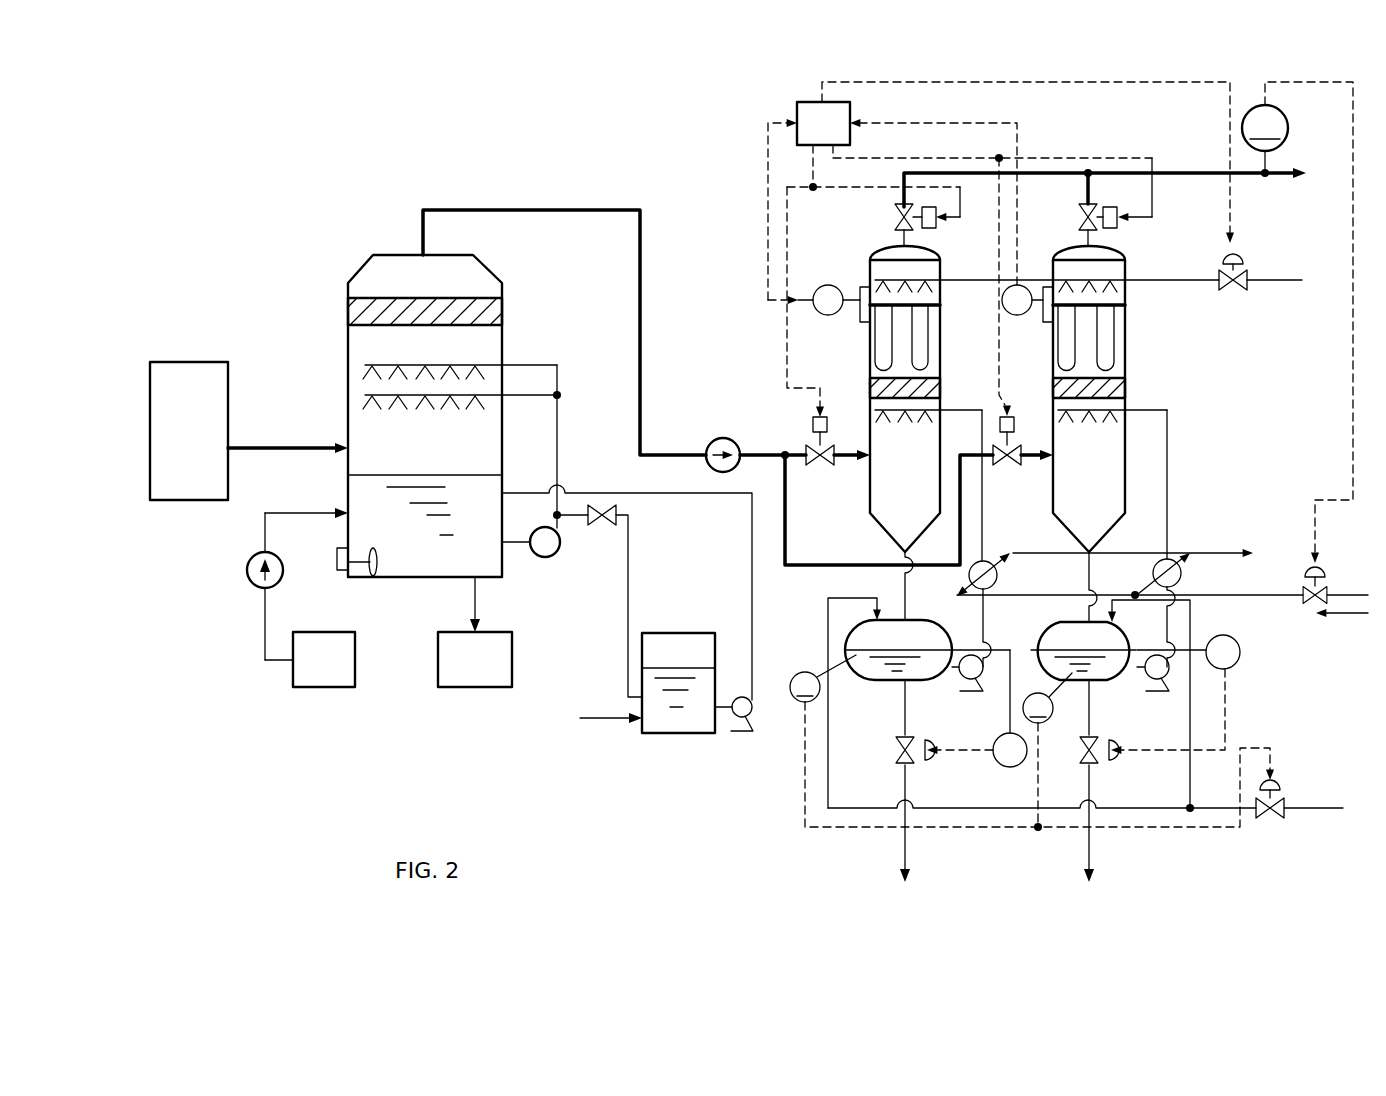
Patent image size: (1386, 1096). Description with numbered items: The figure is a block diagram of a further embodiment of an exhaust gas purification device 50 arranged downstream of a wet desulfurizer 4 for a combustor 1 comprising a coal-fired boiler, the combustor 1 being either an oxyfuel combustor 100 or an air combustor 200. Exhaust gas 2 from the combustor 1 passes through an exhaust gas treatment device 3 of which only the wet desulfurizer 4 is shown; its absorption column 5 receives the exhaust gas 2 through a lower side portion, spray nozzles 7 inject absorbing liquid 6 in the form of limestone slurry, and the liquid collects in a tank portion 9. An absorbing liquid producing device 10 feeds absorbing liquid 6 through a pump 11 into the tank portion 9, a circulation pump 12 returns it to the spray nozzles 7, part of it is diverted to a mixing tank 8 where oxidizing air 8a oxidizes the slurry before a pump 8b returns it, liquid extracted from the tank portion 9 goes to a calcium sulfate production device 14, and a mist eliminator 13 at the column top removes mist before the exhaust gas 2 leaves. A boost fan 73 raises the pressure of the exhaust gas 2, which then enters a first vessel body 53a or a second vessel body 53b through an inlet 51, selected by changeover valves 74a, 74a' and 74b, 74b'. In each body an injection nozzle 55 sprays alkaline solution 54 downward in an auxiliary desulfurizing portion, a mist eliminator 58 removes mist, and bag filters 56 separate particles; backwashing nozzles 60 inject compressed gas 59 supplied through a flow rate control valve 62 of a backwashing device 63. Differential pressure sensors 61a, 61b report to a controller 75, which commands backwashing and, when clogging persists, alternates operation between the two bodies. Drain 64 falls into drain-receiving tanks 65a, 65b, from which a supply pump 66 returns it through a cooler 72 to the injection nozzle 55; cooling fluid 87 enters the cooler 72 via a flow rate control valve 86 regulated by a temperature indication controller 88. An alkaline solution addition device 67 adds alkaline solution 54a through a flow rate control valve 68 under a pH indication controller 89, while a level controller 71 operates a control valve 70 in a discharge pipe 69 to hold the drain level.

The combustor 1 is at (196, 432).
The exhaust gas 2 is at (262, 446).
The exhaust gas treatment device 3 is at (424, 334).
The wet desulfurizer 4 is at (424, 369).
The absorption column 5 is at (348, 347).
The absorbing liquid 6 is at (425, 410).
The spray nozzles 7 is at (412, 428).
The mixing tank 8 is at (637, 654).
The oxidizing air 8a is at (590, 720).
The pump 8b is at (748, 740).
The tank portion 9 is at (503, 578).
The absorbing liquid producing device 10 is at (322, 688).
The pump 11 is at (248, 584).
The circulation pump 12 is at (552, 556).
The mist eliminator 13 is at (502, 298).
The calcium sulfate production device 14 is at (475, 688).
The exhaust gas purification device 50 is at (790, 343).
The inlet 51 is at (876, 462).
The first vessel body 53a is at (1074, 376).
The second vessel body 53b is at (1142, 250).
The alkaline solution 54 is at (912, 432).
The alkaline solution 54a is at (1215, 810).
The injection nozzle 55 is at (940, 417).
The bag filters 56 is at (885, 360).
The mist eliminator 58 is at (868, 386).
The compressed gas 59 is at (925, 322).
The backwashing nozzles 60 is at (935, 285).
The differential pressure sensor 61a is at (826, 285).
The differential pressure sensor 61b is at (1020, 285).
The flow rate control valve 62 is at (1255, 293).
The backwashing device 63 is at (1216, 305).
The drain 64 is at (983, 639).
The drain-receiving tank 65a is at (860, 681).
The drain-receiving tank 65b is at (1100, 682).
The supply pump 66 is at (965, 692).
The alkaline solution addition device 67 is at (1094, 741).
The flow rate control valve 68 is at (1283, 782).
The discharge pipe 69 is at (999, 781).
The control valve 70 is at (927, 762).
The level controller 71 is at (1008, 770).
The cooler 72 is at (998, 587).
The boost fan 73 is at (712, 435).
The changeover valve 74a is at (803, 326).
The changeover valve 74a' is at (942, 238).
The changeover valve 74b is at (919, 361).
The changeover valve 74b' is at (992, 195).
The controller 75 is at (795, 105).
The flow rate control valve 86 is at (1168, 586).
The cooling fluid 87 is at (1358, 616).
The temperature indication controller 88 is at (1289, 128).
The pH indication controller 89 is at (806, 672).
The oxyfuel combustor 100 is at (197, 377).
The air combustor 200 is at (197, 377).